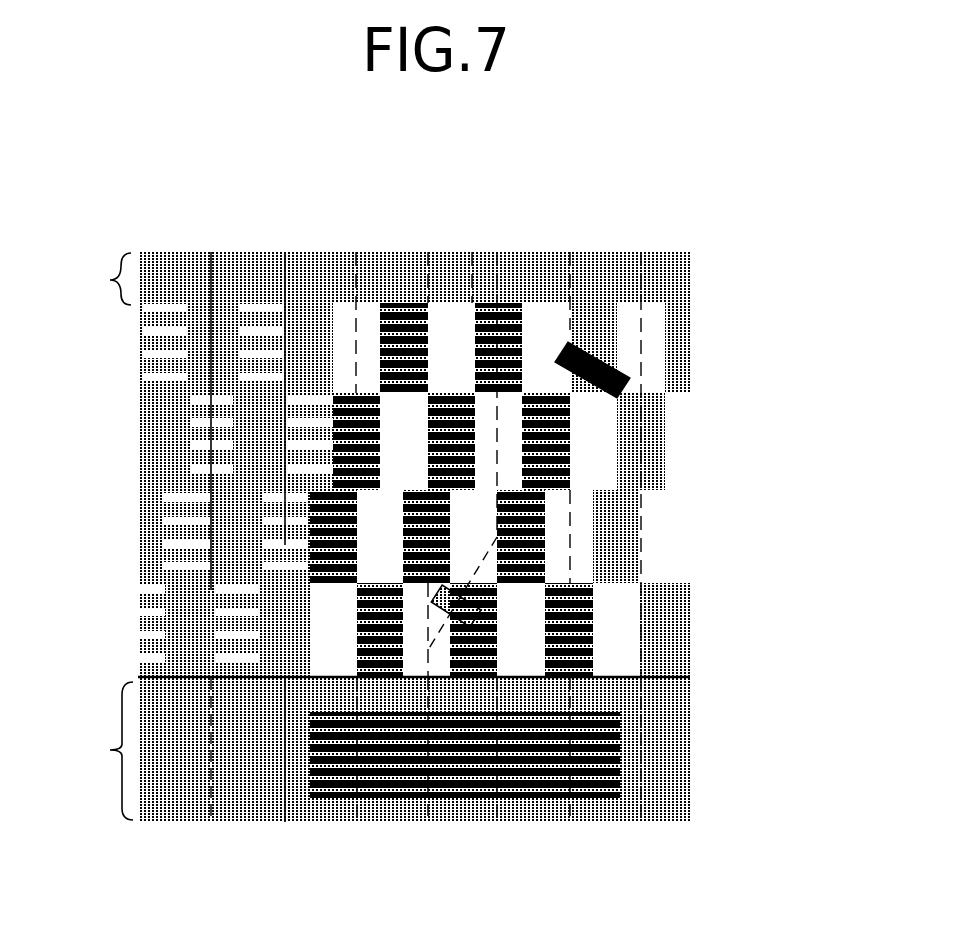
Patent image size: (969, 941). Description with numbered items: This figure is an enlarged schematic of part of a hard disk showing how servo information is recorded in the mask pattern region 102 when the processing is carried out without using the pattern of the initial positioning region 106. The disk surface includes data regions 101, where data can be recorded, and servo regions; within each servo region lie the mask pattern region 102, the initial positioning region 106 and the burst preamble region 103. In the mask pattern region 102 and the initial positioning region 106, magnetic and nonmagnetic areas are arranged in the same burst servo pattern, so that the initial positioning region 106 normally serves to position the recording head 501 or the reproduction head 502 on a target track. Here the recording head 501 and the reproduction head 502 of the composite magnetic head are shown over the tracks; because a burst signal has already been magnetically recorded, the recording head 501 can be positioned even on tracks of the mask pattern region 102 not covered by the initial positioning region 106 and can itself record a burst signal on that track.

The data region 101 is at (366, 464).
The mask pattern region 102 is at (452, 315).
The burst preamble region 103 is at (366, 749).
The initial positioning region 106 is at (309, 315).
The recording head 501 is at (620, 373).
The reproduction head 502 is at (498, 606).